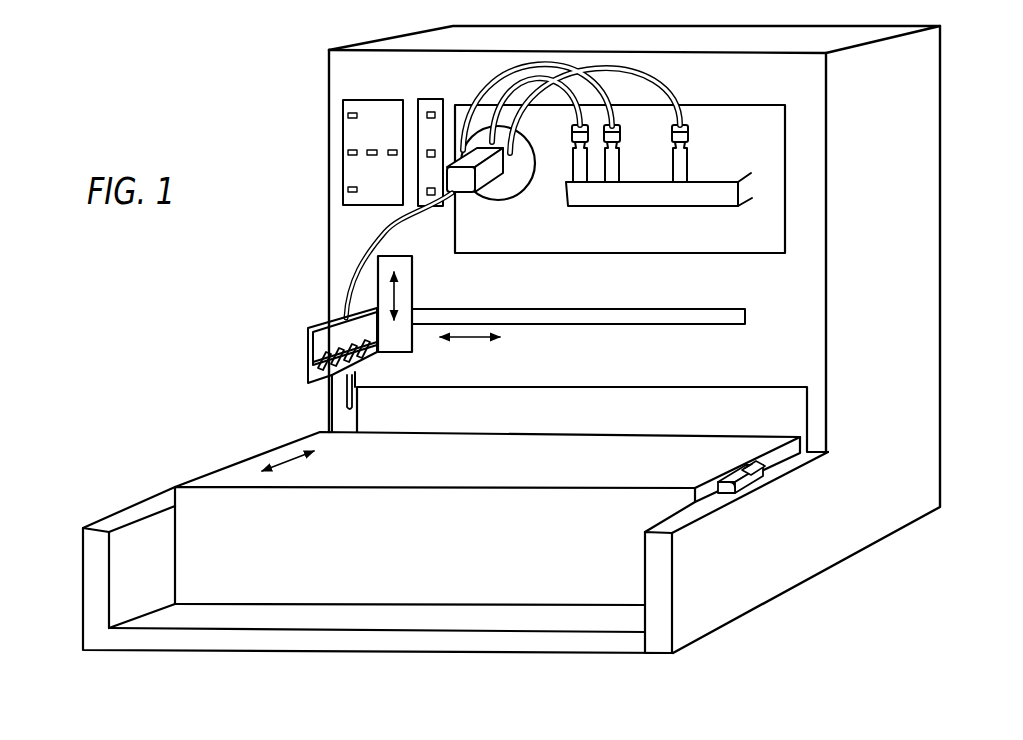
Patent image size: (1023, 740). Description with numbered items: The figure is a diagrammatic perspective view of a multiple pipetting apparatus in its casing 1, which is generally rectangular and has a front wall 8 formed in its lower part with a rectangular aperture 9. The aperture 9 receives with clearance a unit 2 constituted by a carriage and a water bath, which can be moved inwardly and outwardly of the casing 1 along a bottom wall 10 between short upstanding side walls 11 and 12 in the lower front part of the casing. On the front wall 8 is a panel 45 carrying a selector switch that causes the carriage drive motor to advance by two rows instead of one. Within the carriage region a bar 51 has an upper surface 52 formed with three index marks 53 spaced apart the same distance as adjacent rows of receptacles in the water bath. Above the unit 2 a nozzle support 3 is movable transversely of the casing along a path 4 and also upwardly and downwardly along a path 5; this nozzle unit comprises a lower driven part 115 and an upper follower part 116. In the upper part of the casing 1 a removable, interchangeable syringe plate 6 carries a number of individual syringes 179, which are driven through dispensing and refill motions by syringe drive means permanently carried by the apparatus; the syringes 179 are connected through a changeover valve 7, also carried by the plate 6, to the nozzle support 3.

The casing 1 is at (940, 143).
The unit 2 is at (258, 455).
The nozzle support 3 is at (299, 317).
The path 4 is at (583, 313).
The path 5 is at (405, 282).
The syringe plate 6 is at (712, 105).
The valve 7 is at (516, 187).
The front wall 8 is at (790, 317).
The rectangular aperture 9 is at (706, 391).
The bottom wall 10 is at (115, 640).
The side wall 11 is at (129, 567).
The side wall 12 is at (736, 552).
The panel 45 is at (343, 108).
The bar 51 is at (729, 495).
The upper surface 52 is at (765, 479).
The index marks 53 is at (742, 473).
The lower driven part 115 is at (306, 348).
The upper follower part 116 is at (338, 306).
The syringes 179 is at (677, 163).